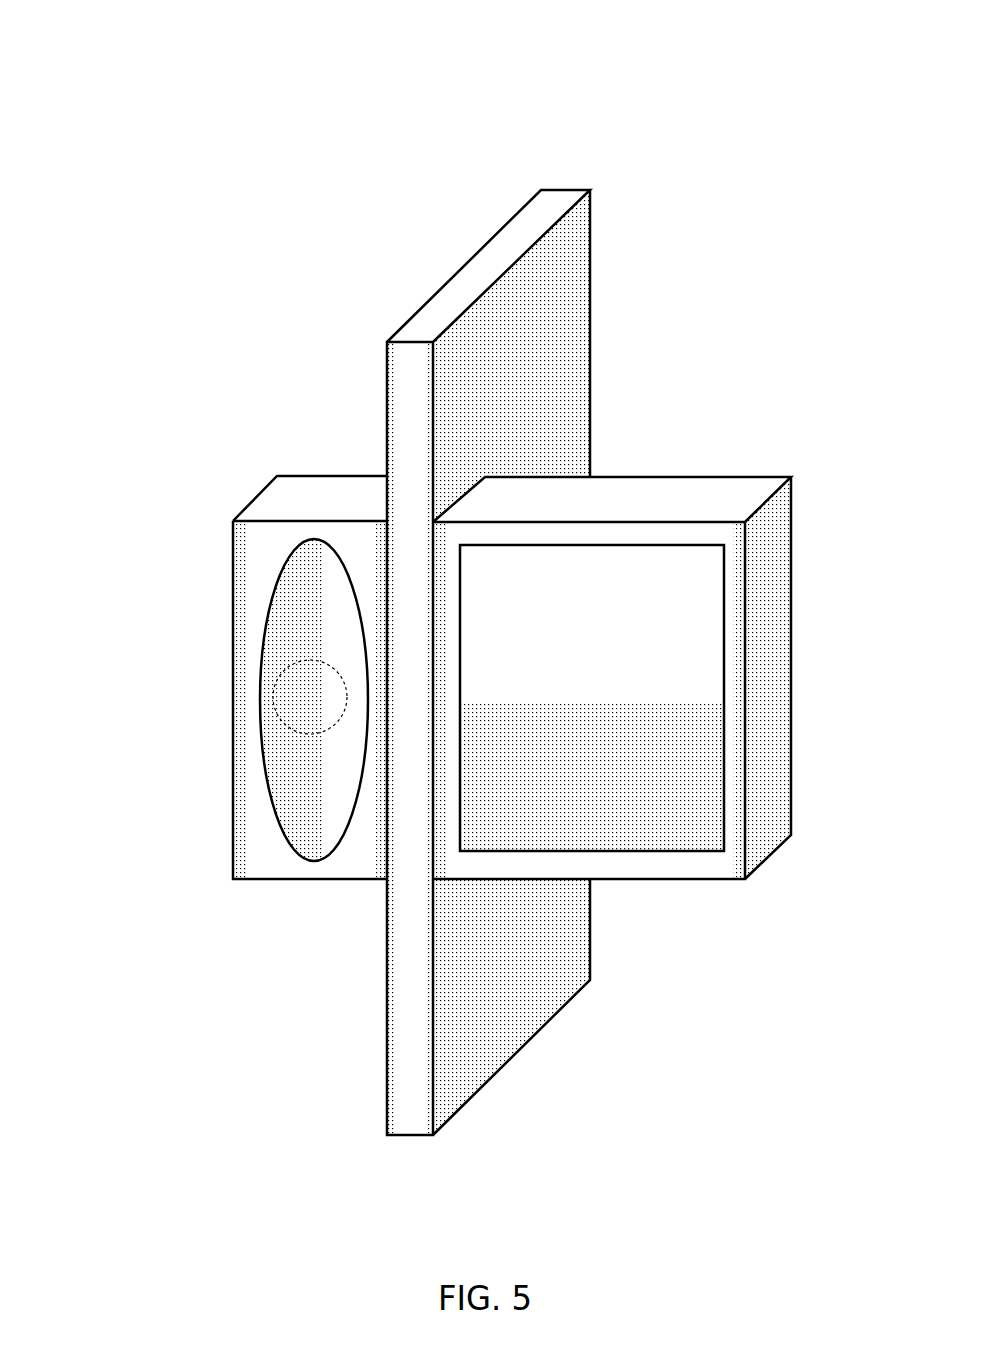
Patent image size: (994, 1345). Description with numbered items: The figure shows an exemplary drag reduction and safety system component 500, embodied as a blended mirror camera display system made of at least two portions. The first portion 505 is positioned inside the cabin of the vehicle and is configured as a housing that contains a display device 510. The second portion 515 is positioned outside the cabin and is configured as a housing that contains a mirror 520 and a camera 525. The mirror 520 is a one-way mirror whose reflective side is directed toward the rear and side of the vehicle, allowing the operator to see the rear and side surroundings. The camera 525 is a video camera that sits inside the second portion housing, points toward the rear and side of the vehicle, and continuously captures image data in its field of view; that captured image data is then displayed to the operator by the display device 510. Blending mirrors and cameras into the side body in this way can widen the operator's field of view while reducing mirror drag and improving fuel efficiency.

The drag reduction and safety system component 500 is at (78, 108).
The first portion 505 is at (647, 492).
The display device 510 is at (628, 698).
The second portion 515 is at (300, 500).
The mirror 520 is at (300, 607).
The camera 525 is at (272, 697).